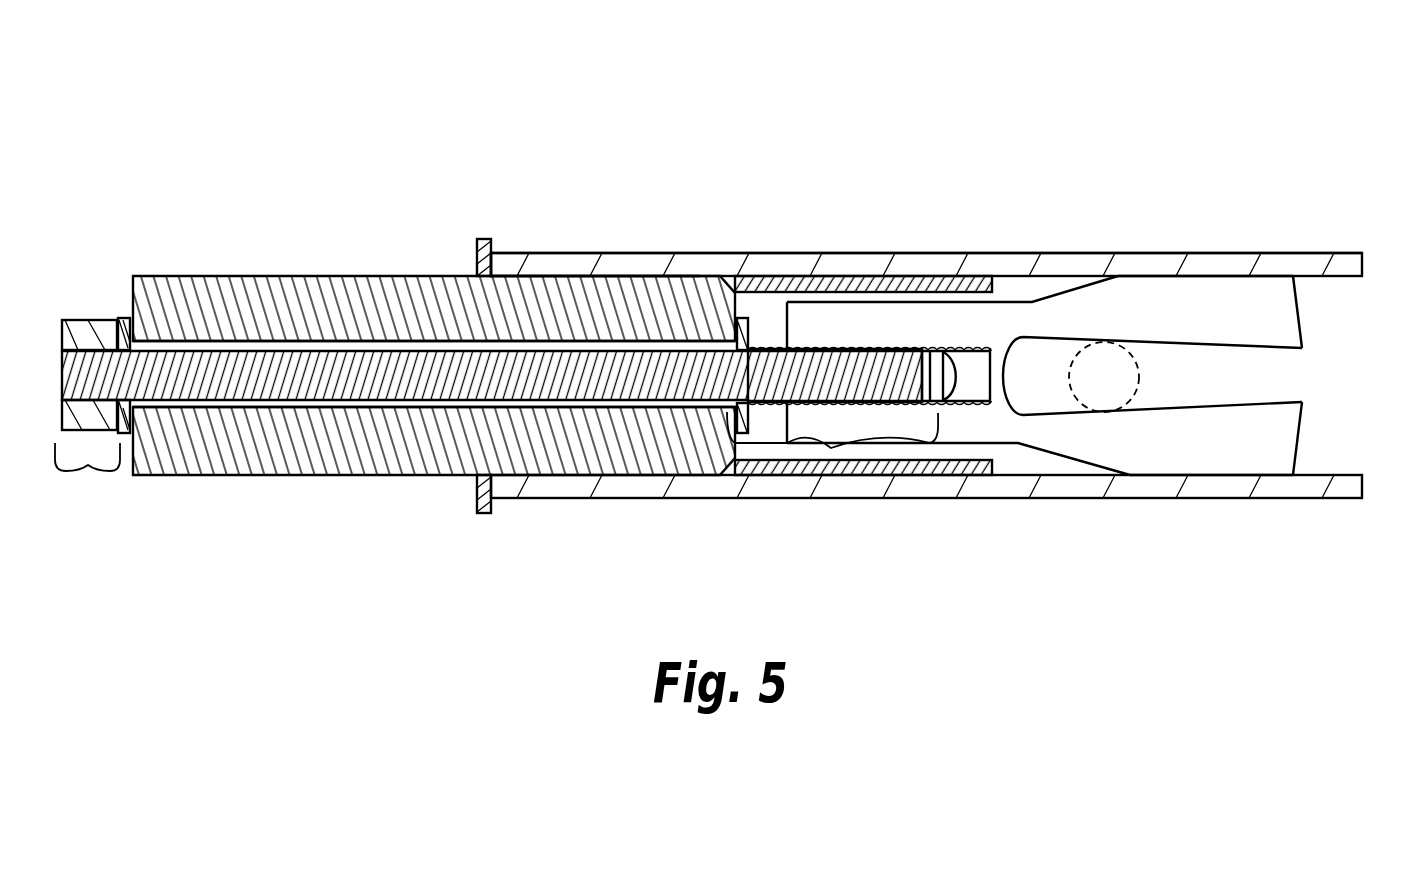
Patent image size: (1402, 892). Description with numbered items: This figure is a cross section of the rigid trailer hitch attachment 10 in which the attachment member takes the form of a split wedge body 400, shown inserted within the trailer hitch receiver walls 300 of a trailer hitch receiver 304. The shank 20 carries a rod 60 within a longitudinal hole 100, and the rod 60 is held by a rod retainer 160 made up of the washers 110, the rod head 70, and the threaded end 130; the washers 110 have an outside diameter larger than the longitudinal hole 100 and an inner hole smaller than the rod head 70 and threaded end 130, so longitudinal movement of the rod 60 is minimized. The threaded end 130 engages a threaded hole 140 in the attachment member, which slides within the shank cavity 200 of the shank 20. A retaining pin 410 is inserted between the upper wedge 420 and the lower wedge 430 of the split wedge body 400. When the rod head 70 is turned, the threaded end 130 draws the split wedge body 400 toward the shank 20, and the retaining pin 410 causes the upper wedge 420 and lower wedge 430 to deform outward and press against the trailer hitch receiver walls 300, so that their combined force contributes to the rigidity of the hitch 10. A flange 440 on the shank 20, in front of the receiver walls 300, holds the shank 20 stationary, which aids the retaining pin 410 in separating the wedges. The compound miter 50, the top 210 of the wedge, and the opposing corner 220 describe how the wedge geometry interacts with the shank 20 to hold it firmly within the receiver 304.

The rigid trailer hitch attachment 10 is at (398, 128).
The shank 20 is at (337, 297).
The compound miter 50 is at (1280, 253).
The rod 60 is at (274, 378).
The rod head 70 is at (90, 320).
The longitudinal hole 100 is at (183, 403).
The washers 110 is at (120, 320).
The threaded end 130 is at (836, 374).
The threaded hole 140 is at (907, 332).
The rod retainer 160 is at (88, 466).
The shank cavity 200 is at (770, 328).
The top of the wedge 210 is at (1332, 276).
The opposing corner 220 is at (1320, 475).
The trailer hitch receiver walls 300 is at (1075, 498).
The trailer hitch receiver 304 is at (563, 253).
The split wedge body 400 is at (1010, 320).
The retaining pin 410 is at (1105, 357).
The upper wedge 420 is at (1197, 293).
The lower wedge 430 is at (1212, 453).
The flange 440 is at (486, 239).